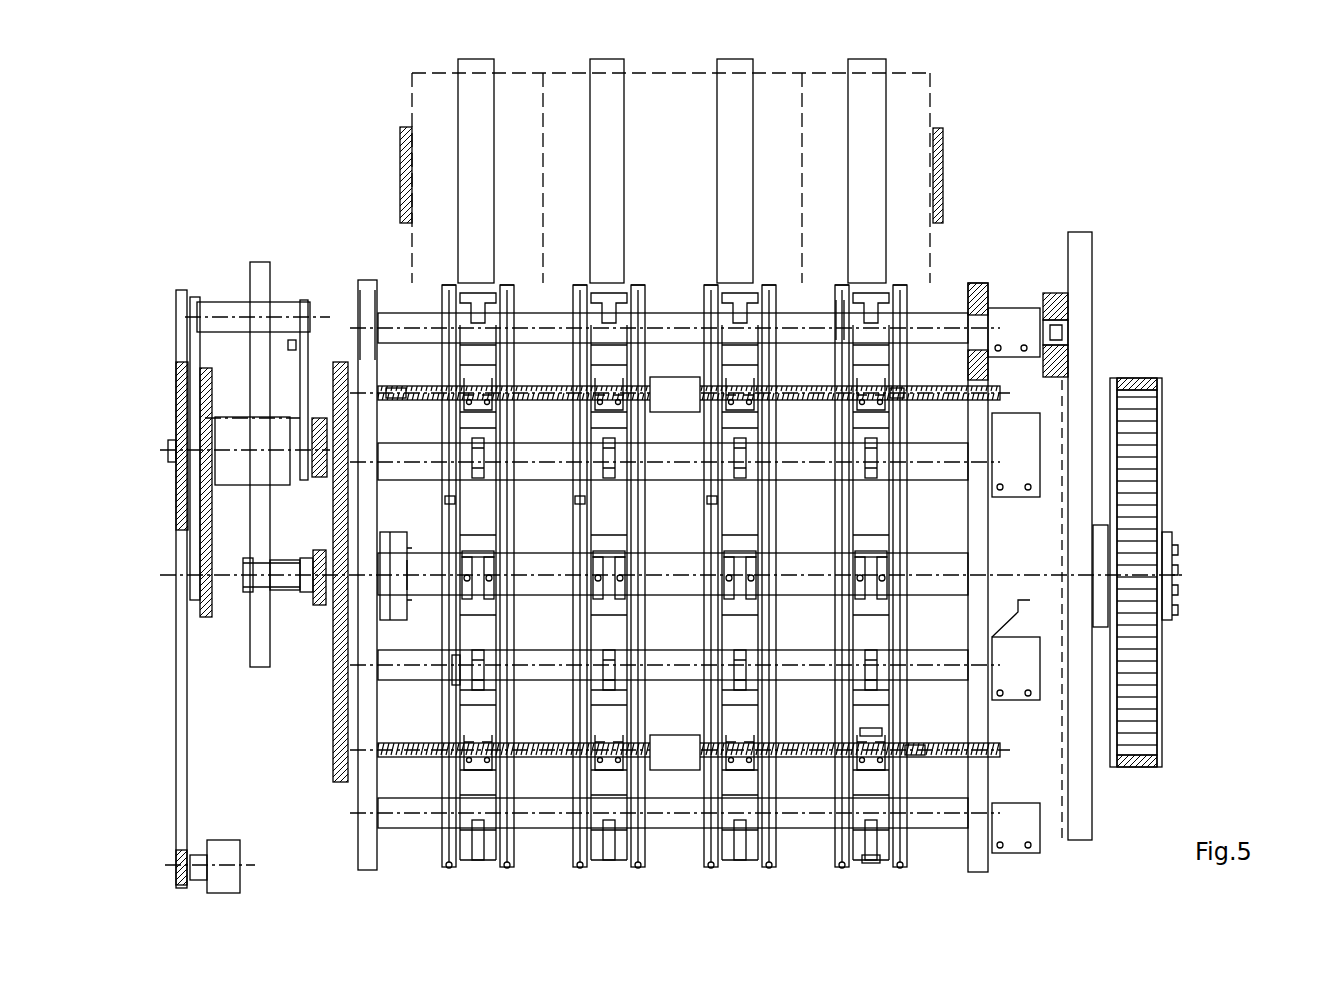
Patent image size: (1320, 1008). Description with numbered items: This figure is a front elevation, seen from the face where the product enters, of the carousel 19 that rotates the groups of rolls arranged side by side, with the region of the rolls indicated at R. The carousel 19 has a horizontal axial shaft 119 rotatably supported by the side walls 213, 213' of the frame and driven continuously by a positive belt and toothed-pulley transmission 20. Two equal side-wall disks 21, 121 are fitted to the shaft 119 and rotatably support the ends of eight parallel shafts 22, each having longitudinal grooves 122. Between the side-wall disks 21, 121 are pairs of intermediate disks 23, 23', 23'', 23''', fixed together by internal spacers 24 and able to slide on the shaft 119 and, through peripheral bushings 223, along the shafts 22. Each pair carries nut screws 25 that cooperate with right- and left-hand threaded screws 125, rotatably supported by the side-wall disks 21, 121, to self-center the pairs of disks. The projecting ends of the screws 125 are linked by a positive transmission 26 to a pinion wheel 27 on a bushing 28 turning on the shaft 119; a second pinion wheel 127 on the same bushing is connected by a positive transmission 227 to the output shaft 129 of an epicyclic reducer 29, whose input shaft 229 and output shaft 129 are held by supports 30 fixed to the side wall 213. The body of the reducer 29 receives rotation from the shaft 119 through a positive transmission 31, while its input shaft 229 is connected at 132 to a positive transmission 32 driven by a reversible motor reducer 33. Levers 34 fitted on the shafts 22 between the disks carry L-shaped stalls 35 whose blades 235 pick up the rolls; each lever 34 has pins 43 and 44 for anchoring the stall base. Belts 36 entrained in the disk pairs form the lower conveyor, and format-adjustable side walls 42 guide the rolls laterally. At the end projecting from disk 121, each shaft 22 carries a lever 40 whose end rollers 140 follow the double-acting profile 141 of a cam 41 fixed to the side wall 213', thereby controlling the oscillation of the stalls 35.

The carousel 19 is at (408, 295).
The positive belt and toothed-pulley transmission 20 is at (1162, 452).
The side-wall disk 21 is at (366, 290).
The shaft 22 is at (790, 450).
The intermediate disk 23 is at (925, 373).
The intermediate disk 23' is at (768, 501).
The intermediate disk 23'' is at (640, 501).
The intermediate disk 23''' is at (514, 501).
The internal spacer 24 is at (882, 522).
The nut screw 25 is at (578, 400).
The positive transmission of motion 26 is at (335, 705).
The toothed pulley or pinion wheel 27 is at (345, 555).
The bushing 28 is at (325, 600).
The epicyclic reducer 29 is at (233, 420).
The support 30 is at (194, 298).
The positive transmission of motion 31 is at (214, 560).
The positive transmission 32 is at (182, 700).
The motor reducer 33 is at (222, 845).
The lever 34 is at (468, 357).
The L-shaped stall 35 is at (478, 210).
The belt 36 is at (473, 292).
The lever 40 is at (1012, 315).
The cam 41 is at (1070, 298).
The format-adjustable side wall 42 is at (398, 170).
The pin 43 is at (878, 862).
The pin 44 is at (872, 732).
The axial shaft 119 is at (1035, 600).
The side-wall disk 121 is at (975, 285).
The longitudinal groove 122 is at (952, 300).
The screw 125 is at (548, 386).
The toothed pulley or pinion wheel 127 is at (300, 578).
The output shaft 129 is at (293, 340).
The connection 132 is at (182, 405).
The end roller 140 is at (1060, 345).
The double-acting profile 141 is at (1060, 300).
The side wall 213 is at (239, 436).
The side wall 213' is at (1131, 526).
The peripheral bushing 223 is at (840, 300).
The positive transmission of motion 227 is at (322, 497).
The input shaft 229 is at (190, 455).
The blade 235 is at (594, 60).
The strip region R is at (412, 90).